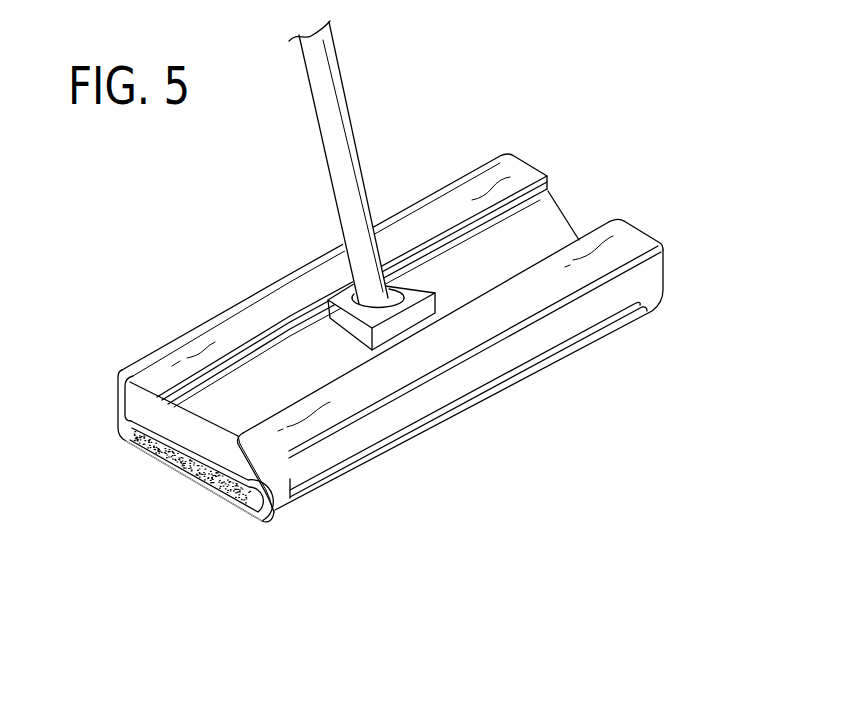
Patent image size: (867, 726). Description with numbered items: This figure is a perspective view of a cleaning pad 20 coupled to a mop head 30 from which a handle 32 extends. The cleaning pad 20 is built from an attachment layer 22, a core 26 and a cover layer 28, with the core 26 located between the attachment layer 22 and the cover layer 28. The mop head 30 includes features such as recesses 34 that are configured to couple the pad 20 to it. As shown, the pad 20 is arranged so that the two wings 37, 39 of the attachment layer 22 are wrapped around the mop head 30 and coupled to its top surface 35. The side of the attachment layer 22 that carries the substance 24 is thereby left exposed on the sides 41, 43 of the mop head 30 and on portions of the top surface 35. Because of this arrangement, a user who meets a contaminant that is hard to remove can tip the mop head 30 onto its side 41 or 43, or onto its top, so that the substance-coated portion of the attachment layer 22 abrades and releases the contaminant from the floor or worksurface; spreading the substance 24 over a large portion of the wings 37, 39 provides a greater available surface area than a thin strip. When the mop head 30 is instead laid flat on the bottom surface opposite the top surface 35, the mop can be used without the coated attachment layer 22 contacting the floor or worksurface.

The cleaning pad 20 is at (637, 237).
The attachment layer 22 is at (213, 495).
The substance 24 is at (292, 483).
The core 26 is at (130, 450).
The cover layer 28 is at (167, 468).
The mop head 30 is at (262, 373).
The handle 32 is at (324, 73).
The recesses 34 is at (481, 175).
The top surface 35 is at (552, 215).
The wing 37 is at (318, 268).
The wing 39 is at (581, 238).
The side 41 is at (250, 496).
The side 43 is at (120, 392).